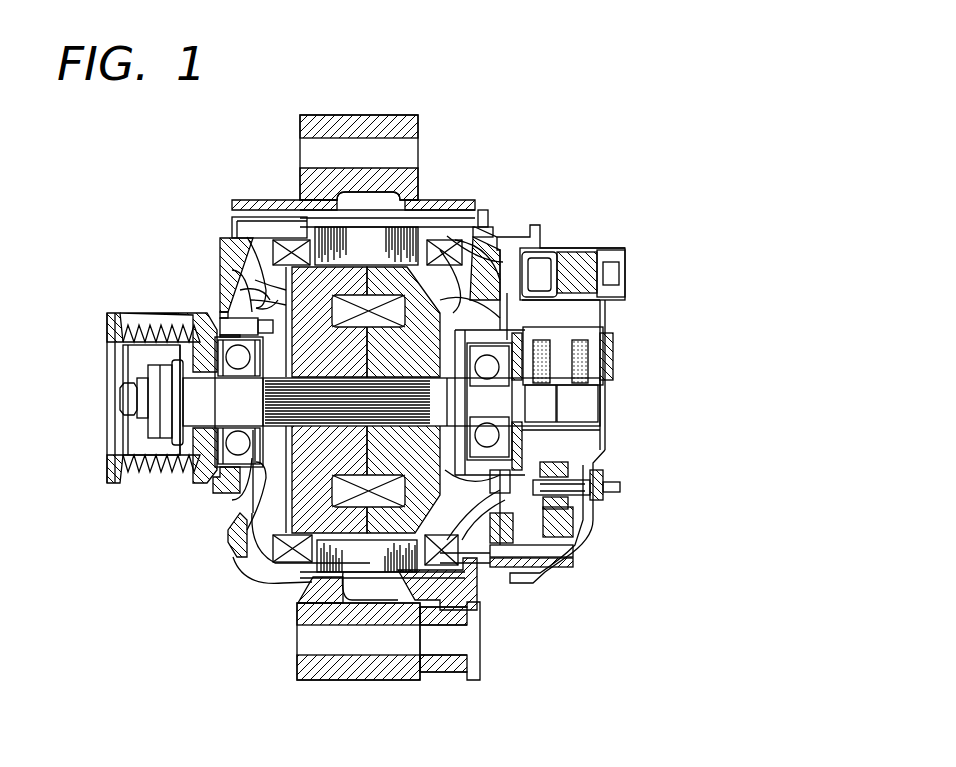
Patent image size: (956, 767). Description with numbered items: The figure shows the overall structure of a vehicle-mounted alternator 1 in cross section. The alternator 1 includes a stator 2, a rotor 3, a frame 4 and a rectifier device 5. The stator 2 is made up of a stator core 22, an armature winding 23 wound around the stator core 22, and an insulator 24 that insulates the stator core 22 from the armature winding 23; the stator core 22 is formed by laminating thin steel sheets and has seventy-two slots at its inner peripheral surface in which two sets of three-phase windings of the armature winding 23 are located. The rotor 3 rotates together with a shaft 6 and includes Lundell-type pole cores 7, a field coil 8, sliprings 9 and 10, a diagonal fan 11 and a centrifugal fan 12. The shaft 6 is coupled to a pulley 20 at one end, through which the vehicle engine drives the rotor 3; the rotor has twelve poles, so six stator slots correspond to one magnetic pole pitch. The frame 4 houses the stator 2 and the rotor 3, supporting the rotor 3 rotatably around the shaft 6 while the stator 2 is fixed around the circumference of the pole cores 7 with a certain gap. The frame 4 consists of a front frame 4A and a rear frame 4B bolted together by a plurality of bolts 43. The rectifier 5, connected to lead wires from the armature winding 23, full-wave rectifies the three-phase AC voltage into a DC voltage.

The vehicle-mounted alternator 1 is at (500, 102).
The stator 2 is at (380, 220).
The rotor 3 is at (266, 266).
The frame 4 is at (395, 432).
The front frame 4A is at (320, 680).
The rear frame 4B is at (443, 672).
The rectifier device 5 is at (598, 522).
The shaft 6 is at (188, 478).
The Lundell-type pole cores 7 is at (245, 272).
The field coil 8 is at (332, 260).
The slipring 9 is at (548, 397).
The slipring 10 is at (580, 415).
The diagonal fan 11 is at (262, 290).
The centrifugal fan 12 is at (520, 248).
The pulley 20 is at (107, 484).
The stator core 22 is at (407, 230).
The armature winding 23 is at (288, 242).
The insulator 24 is at (422, 217).
The bolts 43 is at (485, 210).